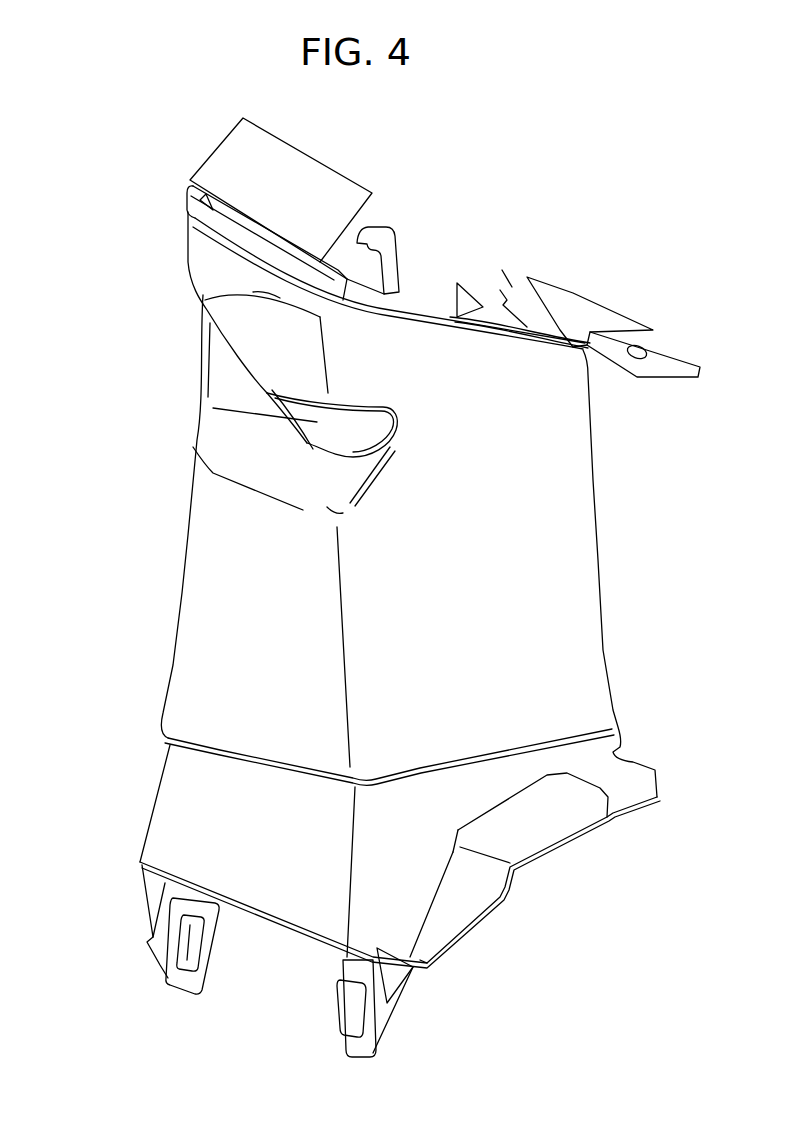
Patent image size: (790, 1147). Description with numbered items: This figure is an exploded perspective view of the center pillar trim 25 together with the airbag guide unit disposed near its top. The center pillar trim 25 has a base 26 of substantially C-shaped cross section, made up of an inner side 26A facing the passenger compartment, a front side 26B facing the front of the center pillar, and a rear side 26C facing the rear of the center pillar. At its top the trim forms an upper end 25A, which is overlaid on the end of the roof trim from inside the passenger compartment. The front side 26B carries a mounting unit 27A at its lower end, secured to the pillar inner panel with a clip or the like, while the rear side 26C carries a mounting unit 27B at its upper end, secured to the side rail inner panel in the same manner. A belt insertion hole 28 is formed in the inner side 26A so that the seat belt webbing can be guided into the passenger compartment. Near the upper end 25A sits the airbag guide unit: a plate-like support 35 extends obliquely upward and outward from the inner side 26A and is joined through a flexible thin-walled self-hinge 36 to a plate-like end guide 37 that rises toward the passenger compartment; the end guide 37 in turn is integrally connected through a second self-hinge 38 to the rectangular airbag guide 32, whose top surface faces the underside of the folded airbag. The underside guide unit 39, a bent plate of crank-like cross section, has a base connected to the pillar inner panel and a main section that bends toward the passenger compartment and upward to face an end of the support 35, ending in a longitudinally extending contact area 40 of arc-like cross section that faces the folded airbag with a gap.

The center pillar trim 25 is at (152, 703).
The upper end 25A is at (222, 252).
The base 26 is at (173, 665).
The inner side 26A is at (225, 592).
The front side 26B is at (187, 535).
The rear side 26C is at (582, 622).
The mounting unit 27A is at (182, 980).
The mounting unit 27B is at (673, 382).
The belt insertion hole 28 is at (300, 440).
The airbag guide 32 is at (230, 142).
The support 35 is at (223, 227).
The self-hinge 36 is at (260, 325).
The end guide 37 is at (253, 292).
The self-hinge 38 is at (193, 223).
The underside guide unit 39 is at (395, 262).
The contact area 40 is at (363, 218).